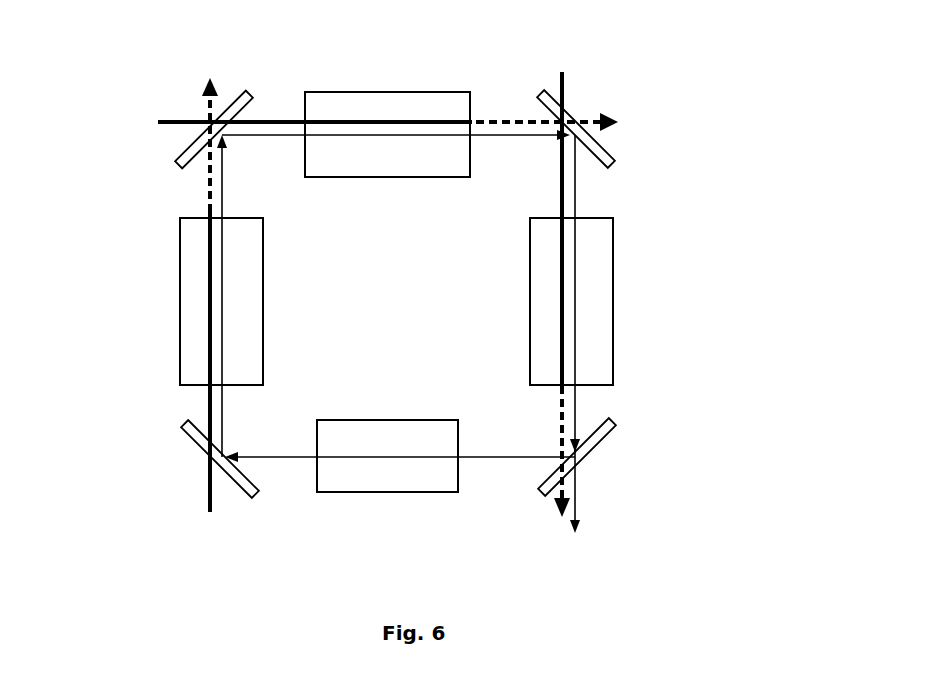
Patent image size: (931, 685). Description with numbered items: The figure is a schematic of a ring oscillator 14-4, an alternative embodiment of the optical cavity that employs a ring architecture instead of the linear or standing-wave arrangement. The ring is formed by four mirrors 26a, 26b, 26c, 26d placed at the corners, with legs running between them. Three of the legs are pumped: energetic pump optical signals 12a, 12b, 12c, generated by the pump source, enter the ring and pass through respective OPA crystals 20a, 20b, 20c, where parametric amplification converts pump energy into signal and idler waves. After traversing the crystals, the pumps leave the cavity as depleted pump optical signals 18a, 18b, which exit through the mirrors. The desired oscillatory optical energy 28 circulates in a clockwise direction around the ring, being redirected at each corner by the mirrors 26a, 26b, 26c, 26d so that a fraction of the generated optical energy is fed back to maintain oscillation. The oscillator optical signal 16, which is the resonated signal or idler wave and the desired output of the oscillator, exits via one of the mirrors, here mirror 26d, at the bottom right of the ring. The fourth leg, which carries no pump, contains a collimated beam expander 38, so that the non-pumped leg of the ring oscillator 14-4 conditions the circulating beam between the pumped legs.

The energetic pump optical signal 12a is at (210, 490).
The energetic pump optical signal 12b is at (167, 122).
The energetic pump optical signal 12c is at (565, 73).
The ring oscillator 14-4 is at (697, 422).
The oscillator optical signal 16 is at (578, 487).
The depleted pump optical signal 18a is at (207, 78).
The depleted pump optical signal 18b is at (610, 117).
The OPA crystal 20a is at (180, 302).
The OPA crystal 20b is at (388, 90).
The OPA crystal 20c is at (530, 298).
The mirror 26a is at (183, 423).
The mirror 26b is at (183, 158).
The mirror 26c is at (615, 163).
The mirror 26d is at (540, 490).
The oscillatory optical energy 28 is at (240, 137).
The collimated beam expander 38 is at (387, 492).